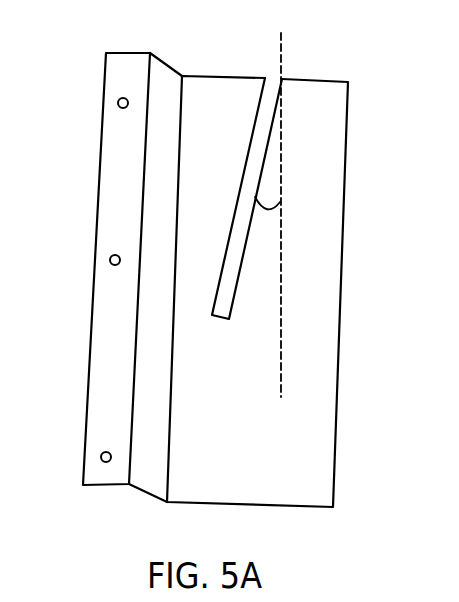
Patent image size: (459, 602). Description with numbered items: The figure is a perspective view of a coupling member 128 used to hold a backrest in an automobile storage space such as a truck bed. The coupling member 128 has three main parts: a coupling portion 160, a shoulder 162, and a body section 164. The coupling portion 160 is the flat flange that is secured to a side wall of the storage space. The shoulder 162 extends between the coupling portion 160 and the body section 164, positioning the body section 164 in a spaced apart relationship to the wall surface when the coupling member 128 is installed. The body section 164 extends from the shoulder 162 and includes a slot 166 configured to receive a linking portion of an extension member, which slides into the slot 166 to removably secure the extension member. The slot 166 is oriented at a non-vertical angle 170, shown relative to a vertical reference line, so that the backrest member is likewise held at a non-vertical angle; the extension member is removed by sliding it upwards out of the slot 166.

The second coupling member 128 is at (189, 52).
The coupling portion 160 is at (90, 350).
The shoulder 162 is at (139, 492).
The body section 164 is at (337, 423).
The slot 166 is at (250, 137).
The non-vertical angle 170 is at (269, 212).